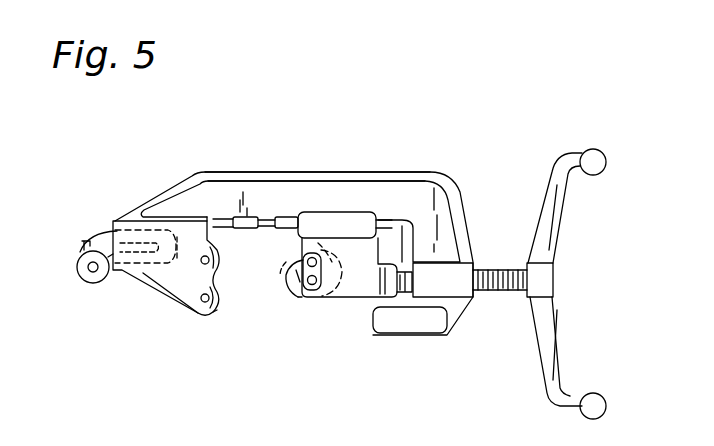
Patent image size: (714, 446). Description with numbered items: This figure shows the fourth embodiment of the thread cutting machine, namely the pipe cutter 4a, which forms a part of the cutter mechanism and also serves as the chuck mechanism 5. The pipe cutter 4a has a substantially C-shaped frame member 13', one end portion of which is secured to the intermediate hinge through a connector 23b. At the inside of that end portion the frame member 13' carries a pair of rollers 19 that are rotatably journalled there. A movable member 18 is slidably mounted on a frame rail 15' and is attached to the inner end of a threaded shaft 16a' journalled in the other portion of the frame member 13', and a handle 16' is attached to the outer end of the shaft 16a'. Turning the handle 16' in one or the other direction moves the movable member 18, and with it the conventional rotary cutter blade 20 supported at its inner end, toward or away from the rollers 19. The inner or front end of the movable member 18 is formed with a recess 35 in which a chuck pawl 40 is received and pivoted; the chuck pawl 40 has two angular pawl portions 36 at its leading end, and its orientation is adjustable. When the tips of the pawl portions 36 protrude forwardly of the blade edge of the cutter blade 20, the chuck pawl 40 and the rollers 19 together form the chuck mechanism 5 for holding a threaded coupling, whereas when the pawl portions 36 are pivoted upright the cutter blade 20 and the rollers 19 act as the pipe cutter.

The pipe cutter 4a is at (335, 124).
The frame member 13' is at (317, 146).
The frame rail 15' is at (337, 170).
The recess 35 is at (318, 245).
The rollers 19 is at (215, 232).
The connector 23b is at (78, 263).
The rotary cutter blade 20 is at (309, 302).
The pawl portions 36 is at (292, 280).
The chuck pawl 40 is at (290, 299).
The chuck mechanism 5 is at (229, 313).
The pad 18 is at (367, 296).
The threaded shaft 16a' is at (470, 255).
The handle 16' is at (553, 266).